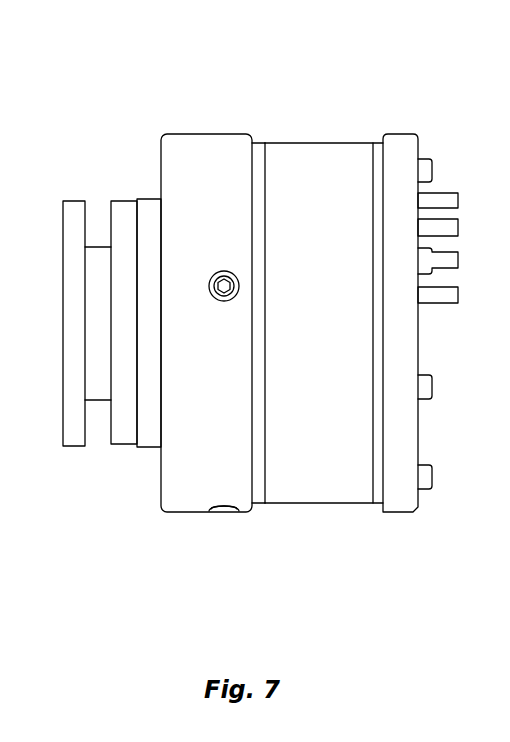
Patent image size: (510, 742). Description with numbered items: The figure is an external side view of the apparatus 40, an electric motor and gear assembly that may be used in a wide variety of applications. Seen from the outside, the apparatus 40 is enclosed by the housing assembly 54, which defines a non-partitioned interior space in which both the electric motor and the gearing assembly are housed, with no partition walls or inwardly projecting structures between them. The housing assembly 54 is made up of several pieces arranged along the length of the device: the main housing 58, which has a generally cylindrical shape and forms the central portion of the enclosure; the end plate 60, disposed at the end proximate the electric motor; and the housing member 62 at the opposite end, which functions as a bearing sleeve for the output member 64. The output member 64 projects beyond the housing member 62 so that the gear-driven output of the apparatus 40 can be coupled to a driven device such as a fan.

The apparatus 40 is at (119, 105).
The housing assembly 54 is at (209, 145).
The main housing 58 is at (313, 495).
The end plate 60 is at (410, 437).
The housing member 62 is at (150, 446).
The output member 64 is at (63, 258).